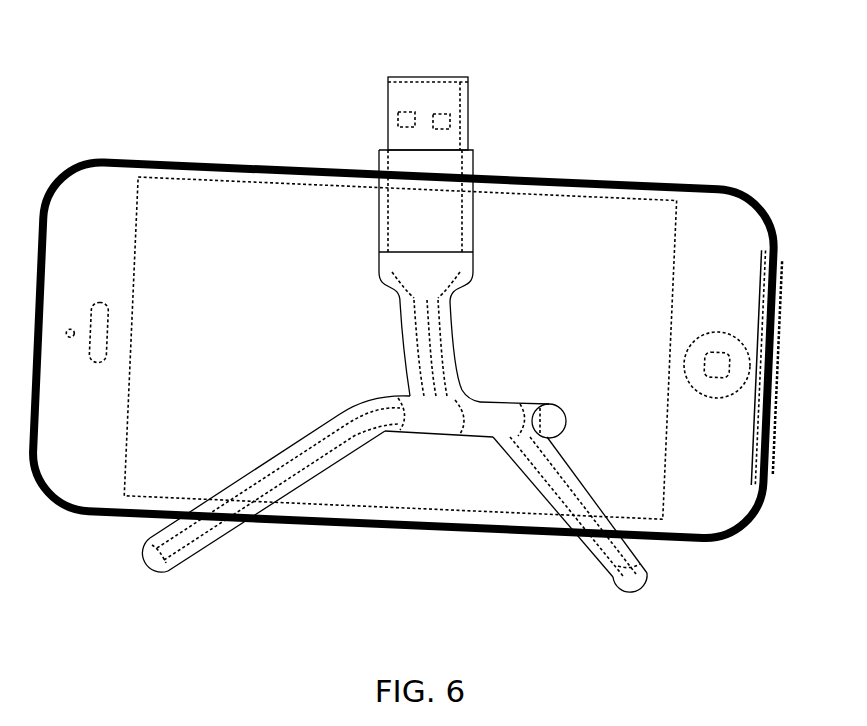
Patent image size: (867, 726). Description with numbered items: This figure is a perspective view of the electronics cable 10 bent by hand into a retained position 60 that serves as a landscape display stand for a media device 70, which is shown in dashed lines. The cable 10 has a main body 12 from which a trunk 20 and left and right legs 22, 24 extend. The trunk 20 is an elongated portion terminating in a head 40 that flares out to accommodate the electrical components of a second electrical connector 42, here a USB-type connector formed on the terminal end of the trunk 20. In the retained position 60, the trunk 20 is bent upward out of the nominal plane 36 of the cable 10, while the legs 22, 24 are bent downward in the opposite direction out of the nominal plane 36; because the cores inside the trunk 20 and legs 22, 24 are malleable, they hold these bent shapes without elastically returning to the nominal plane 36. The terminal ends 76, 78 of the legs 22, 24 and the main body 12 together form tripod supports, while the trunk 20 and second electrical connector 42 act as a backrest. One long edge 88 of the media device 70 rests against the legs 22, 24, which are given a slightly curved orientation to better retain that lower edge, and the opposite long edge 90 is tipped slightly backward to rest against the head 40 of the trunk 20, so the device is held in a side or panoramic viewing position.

The cable 10 is at (399, 340).
The main body 12 is at (482, 402).
The trunk 20 is at (401, 354).
The left leg 22 is at (243, 517).
The right leg 24 is at (602, 545).
The nominal plane 36 is at (582, 420).
The head 40 is at (468, 165).
The second electrical connector 42 is at (473, 111).
The retained position 60 is at (547, 317).
The media device 70 is at (408, 298).
The terminal end of left leg 76 is at (164, 572).
The terminal end of right leg 78 is at (637, 583).
The long edge of media device 88 is at (420, 534).
The opposite long edge of media device 90 is at (270, 163).